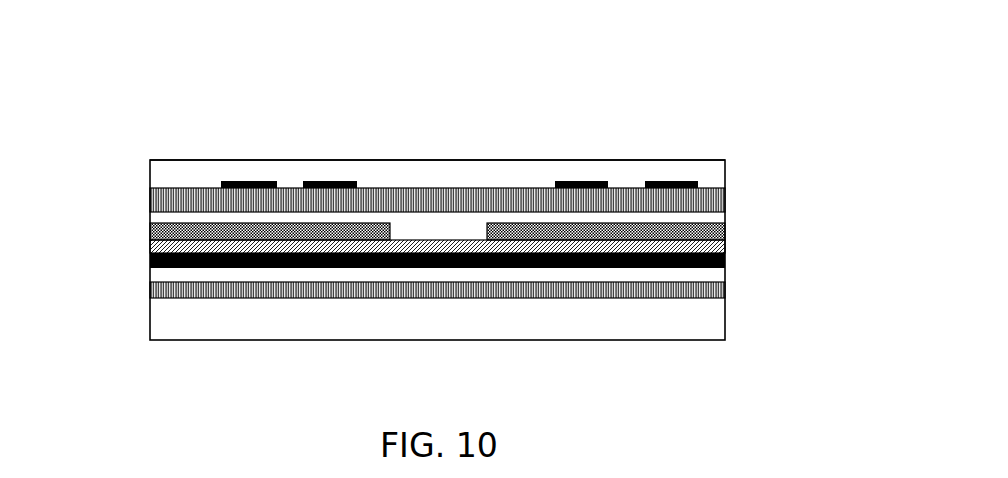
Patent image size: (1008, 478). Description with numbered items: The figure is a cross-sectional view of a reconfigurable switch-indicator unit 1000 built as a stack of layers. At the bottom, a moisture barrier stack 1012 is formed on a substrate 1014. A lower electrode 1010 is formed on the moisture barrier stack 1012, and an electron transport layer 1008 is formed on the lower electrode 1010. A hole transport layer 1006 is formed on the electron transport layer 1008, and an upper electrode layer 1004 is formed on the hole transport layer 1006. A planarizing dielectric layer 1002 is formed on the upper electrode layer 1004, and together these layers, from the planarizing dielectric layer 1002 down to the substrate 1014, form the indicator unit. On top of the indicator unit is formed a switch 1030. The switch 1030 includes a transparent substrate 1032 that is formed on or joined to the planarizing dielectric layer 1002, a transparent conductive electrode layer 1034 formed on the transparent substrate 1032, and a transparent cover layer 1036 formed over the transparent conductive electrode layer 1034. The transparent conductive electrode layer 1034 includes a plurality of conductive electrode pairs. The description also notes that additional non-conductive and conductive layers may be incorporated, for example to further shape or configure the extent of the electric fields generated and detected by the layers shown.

The switch-indicator unit 1000 is at (453, 194).
The switch 1030 is at (424, 155).
The transparent substrate 1032 is at (150, 200).
The transparent conductive electrode layer 1034 is at (588, 181).
The transparent cover layer 1036 is at (421, 160).
The planarizing dielectric layer 1002 is at (150, 218).
The upper electrode layer 1004 is at (150, 231).
The hole transport layer 1006 is at (150, 248).
The electron transport layer 1008 is at (150, 258).
The lower electrode 1010 is at (150, 275).
The moisture barrier stack 1012 is at (150, 286).
The substrate 1014 is at (150, 320).